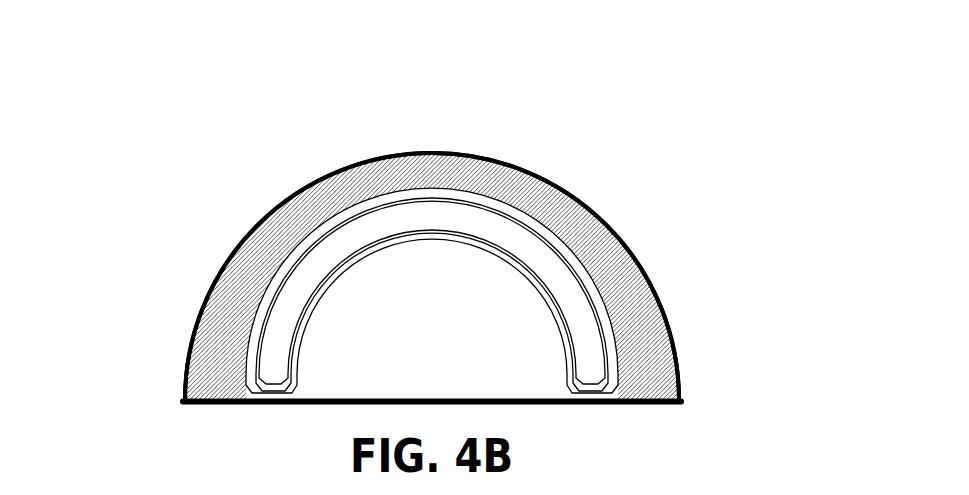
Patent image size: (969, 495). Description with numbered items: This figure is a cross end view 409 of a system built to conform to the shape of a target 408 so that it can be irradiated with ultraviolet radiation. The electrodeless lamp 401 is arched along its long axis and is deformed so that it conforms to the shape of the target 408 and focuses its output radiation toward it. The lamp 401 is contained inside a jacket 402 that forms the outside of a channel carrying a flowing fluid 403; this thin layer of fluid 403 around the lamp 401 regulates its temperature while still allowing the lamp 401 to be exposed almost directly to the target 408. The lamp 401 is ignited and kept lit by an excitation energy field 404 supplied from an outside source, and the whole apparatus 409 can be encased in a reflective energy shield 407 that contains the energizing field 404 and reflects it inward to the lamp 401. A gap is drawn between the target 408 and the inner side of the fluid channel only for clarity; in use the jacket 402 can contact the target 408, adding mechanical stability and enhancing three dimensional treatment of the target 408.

The electrodeless lamp 401 is at (342, 237).
The jacket 402 is at (400, 183).
The flowing fluid 403 is at (502, 250).
The excitation energy field 404 is at (615, 273).
The reflective energy shield 407 is at (218, 277).
The target 408 is at (447, 347).
The cross end view of the apparatus 409 is at (705, 94).